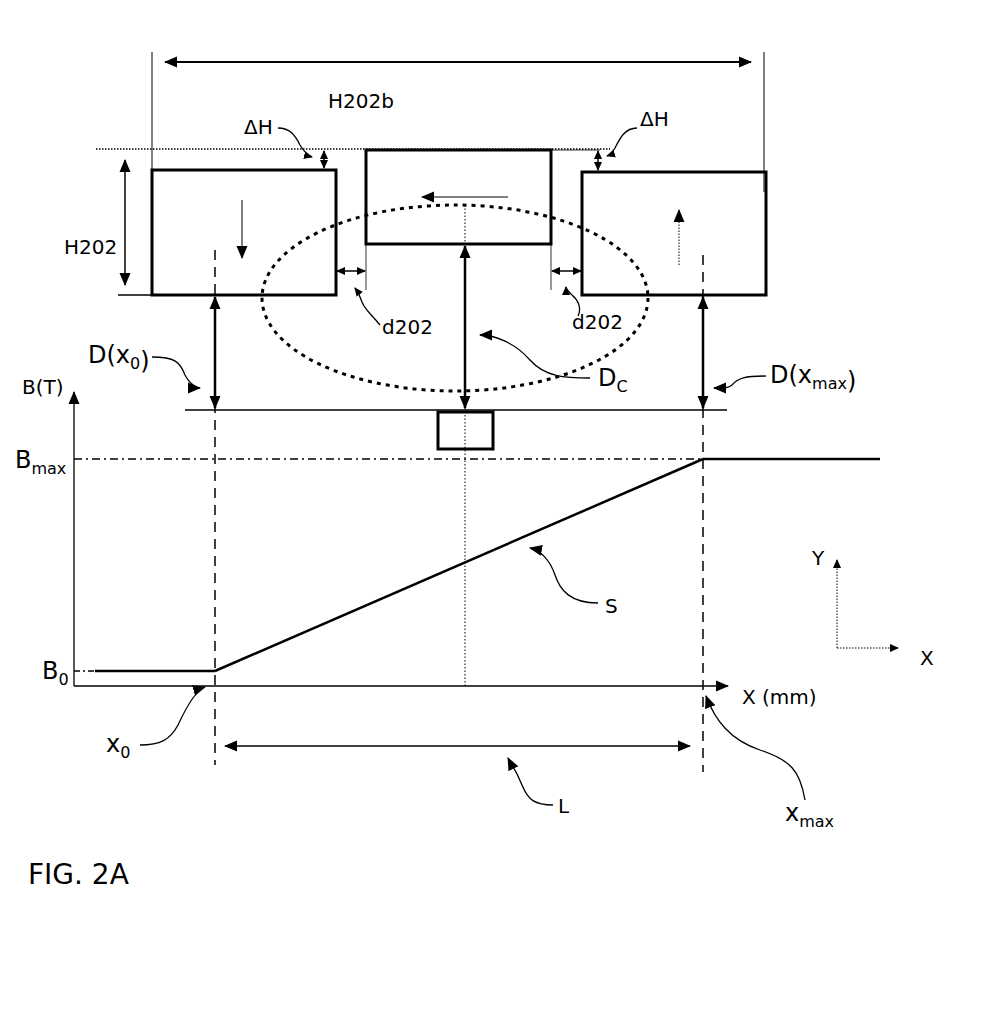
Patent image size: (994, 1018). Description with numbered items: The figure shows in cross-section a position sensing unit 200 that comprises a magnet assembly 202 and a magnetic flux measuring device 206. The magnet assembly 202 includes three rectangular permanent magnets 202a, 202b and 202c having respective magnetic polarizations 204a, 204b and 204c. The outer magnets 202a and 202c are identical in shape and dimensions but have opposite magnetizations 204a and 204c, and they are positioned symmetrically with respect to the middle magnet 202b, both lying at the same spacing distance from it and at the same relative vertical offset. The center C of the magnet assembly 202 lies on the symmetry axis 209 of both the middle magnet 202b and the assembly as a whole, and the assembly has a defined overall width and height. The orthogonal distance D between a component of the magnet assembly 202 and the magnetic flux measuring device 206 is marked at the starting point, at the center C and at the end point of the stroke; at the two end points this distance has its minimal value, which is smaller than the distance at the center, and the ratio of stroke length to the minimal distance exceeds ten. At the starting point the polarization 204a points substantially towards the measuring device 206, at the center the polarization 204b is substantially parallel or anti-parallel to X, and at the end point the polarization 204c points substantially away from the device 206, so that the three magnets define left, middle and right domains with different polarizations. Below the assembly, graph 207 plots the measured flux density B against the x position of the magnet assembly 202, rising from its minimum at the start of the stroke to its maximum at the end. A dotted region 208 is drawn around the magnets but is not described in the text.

The position sensing unit 200 is at (72, 53).
The magnet assembly 202 is at (785, 86).
The rectangular permanent magnet 202a is at (138, 207).
The rectangular permanent magnet 202b is at (530, 137).
The rectangular permanent magnet 202c is at (738, 158).
The magnetic polarization 204a is at (228, 210).
The magnetic polarization 204b is at (442, 180).
The magnetic polarization 204c is at (690, 230).
The magnetic flux measuring device 206 is at (507, 443).
The graph 207 is at (720, 528).
The field region / dotted ellipse 208 is at (648, 339).
The symmetry axis 209 is at (448, 662).